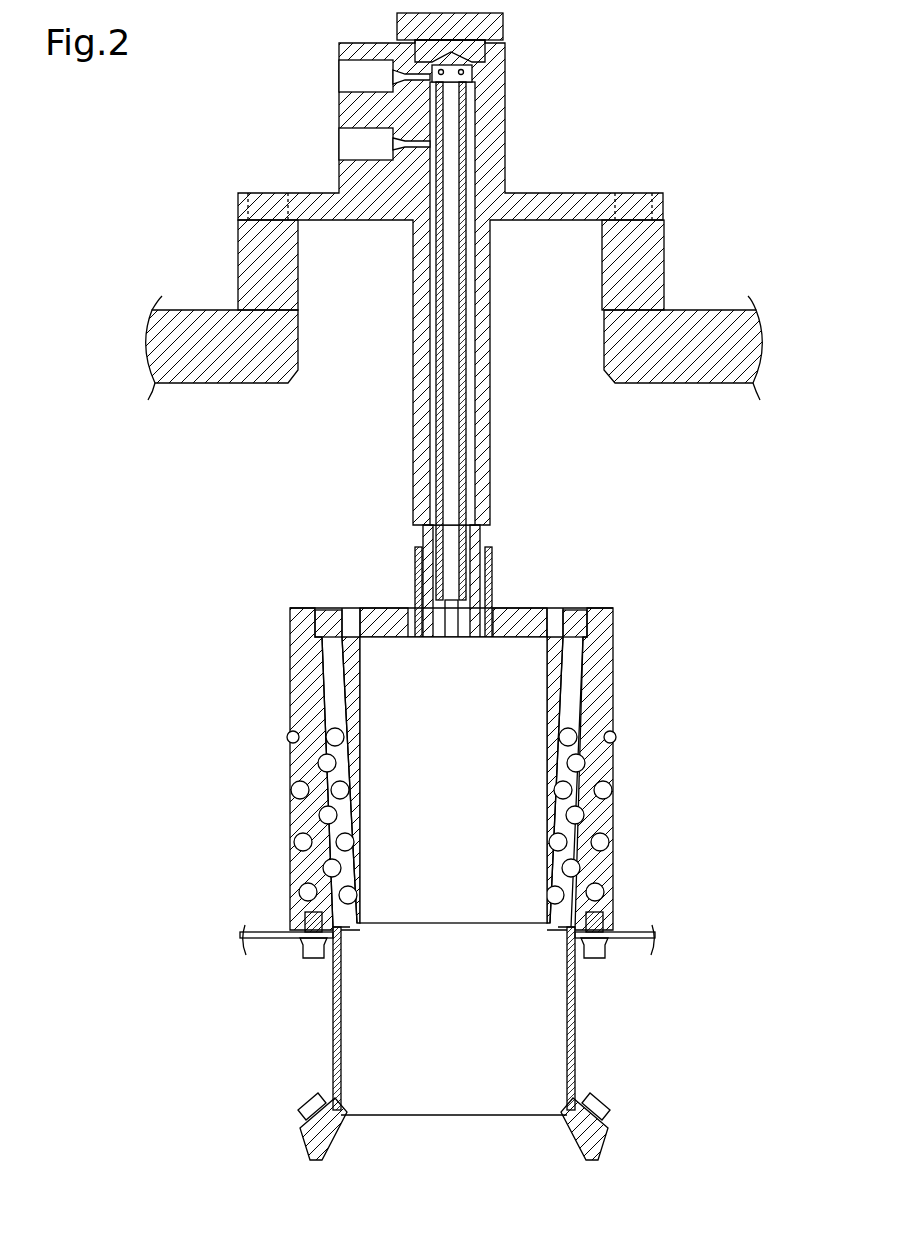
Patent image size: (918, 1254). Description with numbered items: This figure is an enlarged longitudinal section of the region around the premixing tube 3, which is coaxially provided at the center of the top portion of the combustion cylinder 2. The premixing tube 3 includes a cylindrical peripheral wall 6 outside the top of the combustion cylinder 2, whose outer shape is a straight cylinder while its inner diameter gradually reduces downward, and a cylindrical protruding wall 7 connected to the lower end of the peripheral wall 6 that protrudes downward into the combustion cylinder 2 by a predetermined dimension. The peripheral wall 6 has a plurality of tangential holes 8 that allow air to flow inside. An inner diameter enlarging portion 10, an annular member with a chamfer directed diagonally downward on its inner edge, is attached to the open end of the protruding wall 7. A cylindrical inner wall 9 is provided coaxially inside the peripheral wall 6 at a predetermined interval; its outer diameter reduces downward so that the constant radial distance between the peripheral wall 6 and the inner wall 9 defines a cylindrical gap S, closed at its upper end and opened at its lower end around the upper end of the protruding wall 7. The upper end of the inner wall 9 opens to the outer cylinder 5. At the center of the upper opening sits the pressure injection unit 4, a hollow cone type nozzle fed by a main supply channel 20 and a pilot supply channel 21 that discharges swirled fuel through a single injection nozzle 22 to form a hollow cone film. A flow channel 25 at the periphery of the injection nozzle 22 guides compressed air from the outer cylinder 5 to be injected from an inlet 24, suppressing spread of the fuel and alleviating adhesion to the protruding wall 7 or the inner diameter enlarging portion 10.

The combustion cylinder 2 is at (262, 925).
The premixing tube 3 is at (533, 861).
The pressure injection unit 4 is at (496, 578).
The outer cylinder 5 is at (665, 250).
The peripheral wall 6 is at (610, 712).
The protruding wall 7 is at (580, 1040).
The holes 8 is at (298, 788).
The inner wall 9 is at (445, 925).
The inner diameter enlarging portion 10 is at (312, 1140).
The main supply channel 20 is at (352, 78).
The pilot supply channel 21 is at (352, 148).
The injection nozzle 22 is at (455, 652).
The inlet 24 is at (414, 540).
The flow channel 25 is at (420, 652).
The gap S is at (330, 690).